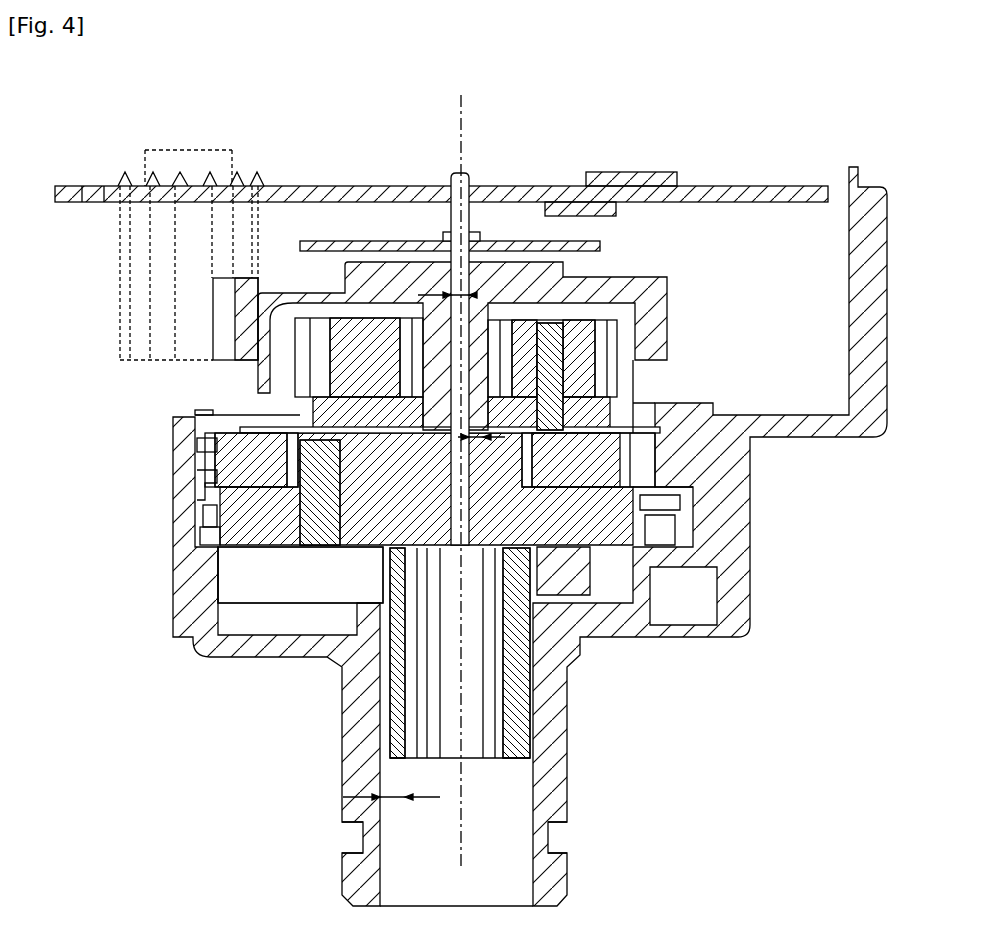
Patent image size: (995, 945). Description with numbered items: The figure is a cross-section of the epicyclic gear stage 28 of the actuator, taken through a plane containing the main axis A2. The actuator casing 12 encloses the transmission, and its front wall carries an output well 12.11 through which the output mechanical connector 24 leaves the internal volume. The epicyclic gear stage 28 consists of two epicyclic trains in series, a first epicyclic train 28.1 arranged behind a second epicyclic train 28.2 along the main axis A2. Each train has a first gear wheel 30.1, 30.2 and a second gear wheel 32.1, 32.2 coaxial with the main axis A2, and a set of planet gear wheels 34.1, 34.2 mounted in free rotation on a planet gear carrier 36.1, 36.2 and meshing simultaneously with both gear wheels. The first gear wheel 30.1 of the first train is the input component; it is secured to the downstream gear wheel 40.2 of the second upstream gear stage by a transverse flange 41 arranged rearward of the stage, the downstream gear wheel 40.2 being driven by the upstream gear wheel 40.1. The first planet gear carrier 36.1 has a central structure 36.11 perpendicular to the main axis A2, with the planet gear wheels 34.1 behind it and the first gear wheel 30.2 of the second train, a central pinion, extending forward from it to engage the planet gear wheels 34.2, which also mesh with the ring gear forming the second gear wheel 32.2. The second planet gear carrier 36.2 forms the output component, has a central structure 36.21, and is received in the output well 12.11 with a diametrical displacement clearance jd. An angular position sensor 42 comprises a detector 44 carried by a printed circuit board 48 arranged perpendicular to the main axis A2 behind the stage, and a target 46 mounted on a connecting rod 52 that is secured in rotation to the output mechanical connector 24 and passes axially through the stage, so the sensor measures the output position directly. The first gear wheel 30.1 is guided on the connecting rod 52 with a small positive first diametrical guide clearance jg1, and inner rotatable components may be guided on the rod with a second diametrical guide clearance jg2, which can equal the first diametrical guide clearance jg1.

The actuator casing 12 is at (858, 474).
The output well 12.11 is at (555, 766).
The output mechanical connector 24 is at (536, 684).
The epicyclic gear stage 28 is at (456, 416).
The first epicyclic train 28.1 is at (425, 361).
The second epicyclic train 28.2 is at (507, 464).
The first gear wheel of the first epicyclic train 30.1 is at (430, 375).
The first gear wheel of the second epicyclic train 30.2 is at (260, 497).
The second gear wheel of the first epicyclic train 32.1 is at (608, 378).
The second gear wheel of the second epicyclic train 32.2 is at (675, 445).
The planet gear wheels of the first epicyclic train 34.1 is at (615, 392).
The planet gear wheels of the second epicyclic train 34.2 is at (660, 495).
The planet gear carrier of the first epicyclic train 36.1 is at (415, 408).
The central structure of the first planet gear carrier 36.11 is at (198, 420).
The planet gear carrier of the second epicyclic train 36.2 is at (377, 562).
The central structure of the second planet gear carrier 36.21 is at (347, 550).
The upstream gear wheel of the second upstream gear stage 40.1 is at (115, 280).
The downstream gear wheel of the second upstream gear stage 40.2 is at (222, 313).
The transverse flange 41 is at (628, 277).
The angular position sensor 42 is at (489, 160).
The detector 44 is at (563, 215).
The target 46 is at (600, 250).
The printed circuit board 48 is at (728, 195).
The connecting rod 52 is at (467, 222).
The main axis A2 is at (464, 118).
The diametrical displacement clearance jd is at (391, 809).
The first diametrical guide clearance jg1 is at (439, 283).
The second diametrical guide clearance jg2 is at (486, 423).